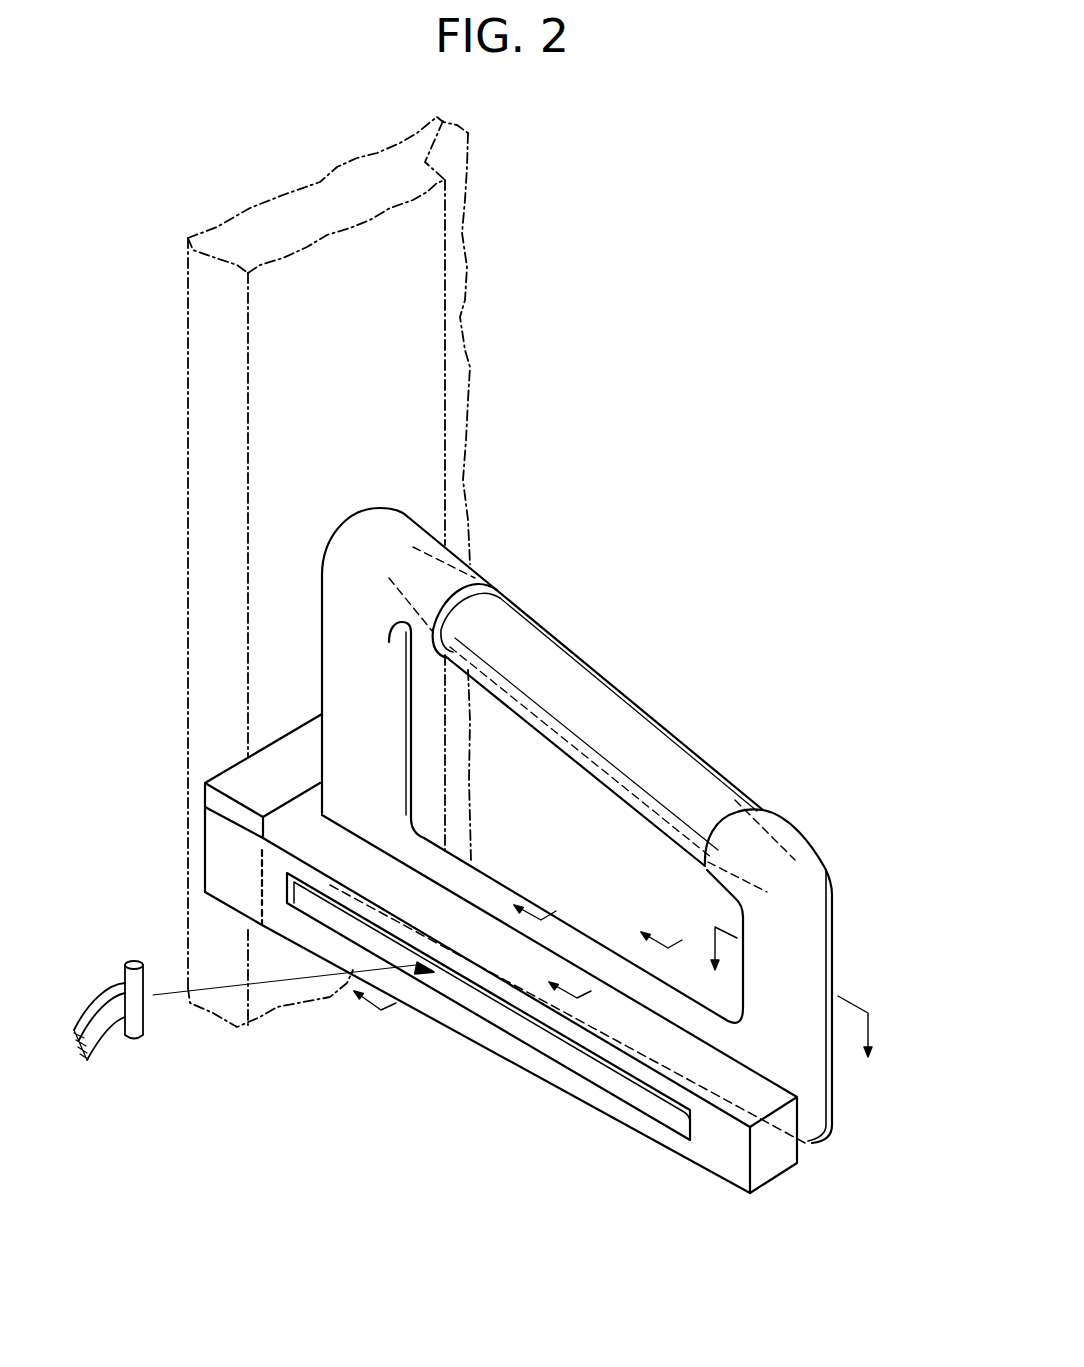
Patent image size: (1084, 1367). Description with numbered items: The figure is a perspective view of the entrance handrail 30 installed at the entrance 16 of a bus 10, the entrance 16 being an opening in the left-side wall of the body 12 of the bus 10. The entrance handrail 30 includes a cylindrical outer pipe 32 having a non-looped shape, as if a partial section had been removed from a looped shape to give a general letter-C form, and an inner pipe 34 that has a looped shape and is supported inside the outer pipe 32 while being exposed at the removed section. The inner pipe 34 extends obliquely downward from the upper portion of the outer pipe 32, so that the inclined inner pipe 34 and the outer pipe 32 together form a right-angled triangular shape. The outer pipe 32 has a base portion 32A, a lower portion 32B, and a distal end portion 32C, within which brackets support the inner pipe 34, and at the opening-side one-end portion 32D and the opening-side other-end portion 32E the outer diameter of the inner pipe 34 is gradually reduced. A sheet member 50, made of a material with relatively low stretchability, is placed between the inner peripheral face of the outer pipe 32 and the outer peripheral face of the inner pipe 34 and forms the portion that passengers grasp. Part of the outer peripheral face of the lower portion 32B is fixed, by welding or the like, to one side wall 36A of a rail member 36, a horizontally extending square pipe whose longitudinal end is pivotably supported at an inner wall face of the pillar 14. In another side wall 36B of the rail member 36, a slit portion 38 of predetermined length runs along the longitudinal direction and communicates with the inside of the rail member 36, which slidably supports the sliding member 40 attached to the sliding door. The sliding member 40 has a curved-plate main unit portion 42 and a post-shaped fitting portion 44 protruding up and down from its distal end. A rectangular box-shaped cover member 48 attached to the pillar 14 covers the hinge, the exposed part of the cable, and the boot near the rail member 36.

The bus 10 is at (531, 279).
The body 12 is at (314, 543).
The pillar 14 is at (445, 428).
The entrance 16 is at (188, 430).
The entrance handrail 30 is at (783, 776).
The outer pipe 32 is at (613, 771).
The base portion 32A is at (337, 662).
The lower portion 32B is at (581, 945).
The distal end portion 32C is at (803, 935).
The opening-side one-end portion 32D is at (503, 590).
The opening-side other-end portion 32E is at (725, 810).
The inner pipe 34 is at (648, 775).
The rail member 36 is at (555, 1052).
The one side wall 36A is at (800, 1147).
The another side wall 36B is at (713, 1153).
The slit portion 38 is at (587, 1078).
The sliding member 40 is at (82, 1068).
The main unit portion 42 is at (429, 1015).
The fitting portion 44 is at (143, 1035).
The cover member 48 is at (288, 750).
The sheet member 50 is at (597, 677).